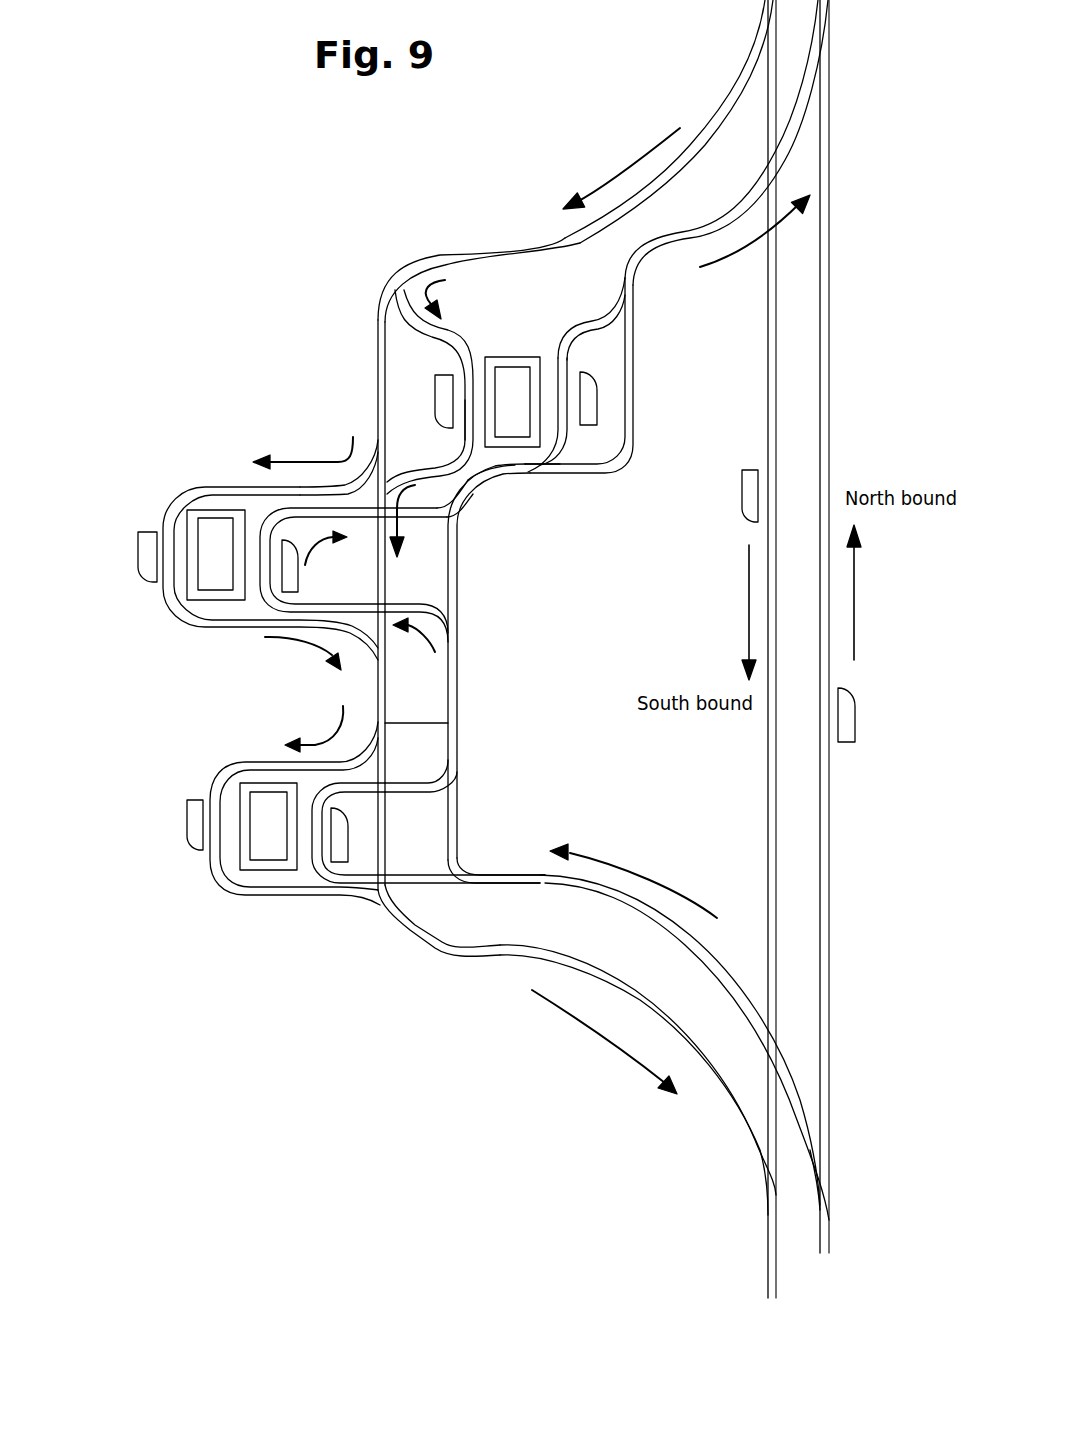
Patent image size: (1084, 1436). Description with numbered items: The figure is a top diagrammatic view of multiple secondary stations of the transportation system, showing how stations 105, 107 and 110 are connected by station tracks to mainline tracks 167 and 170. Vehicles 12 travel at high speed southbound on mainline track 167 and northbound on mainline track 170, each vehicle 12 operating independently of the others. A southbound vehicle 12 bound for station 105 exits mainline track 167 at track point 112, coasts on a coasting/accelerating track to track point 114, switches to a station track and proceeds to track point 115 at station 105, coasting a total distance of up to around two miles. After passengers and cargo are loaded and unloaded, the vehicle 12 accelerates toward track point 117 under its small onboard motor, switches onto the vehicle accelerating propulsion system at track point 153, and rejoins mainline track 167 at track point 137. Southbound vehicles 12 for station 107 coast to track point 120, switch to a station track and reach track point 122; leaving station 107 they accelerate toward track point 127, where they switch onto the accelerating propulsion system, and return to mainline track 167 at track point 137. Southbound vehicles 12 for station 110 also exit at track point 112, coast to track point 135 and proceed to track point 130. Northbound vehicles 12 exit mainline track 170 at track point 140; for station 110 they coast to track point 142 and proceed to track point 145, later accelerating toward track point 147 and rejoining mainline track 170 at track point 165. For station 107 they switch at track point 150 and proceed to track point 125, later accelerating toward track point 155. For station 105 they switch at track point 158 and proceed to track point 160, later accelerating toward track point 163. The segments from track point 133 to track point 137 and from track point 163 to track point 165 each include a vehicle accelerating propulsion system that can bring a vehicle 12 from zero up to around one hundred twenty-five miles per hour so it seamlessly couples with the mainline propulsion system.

The vehicle 12 is at (433, 385).
The station 105 is at (510, 362).
The station 107 is at (217, 597).
The station 110 is at (250, 870).
The track point 112 is at (765, 23).
The track point 114 is at (392, 280).
The track point 115 is at (477, 378).
The track point 117 is at (457, 435).
The track point 120 is at (378, 465).
The track point 122 is at (165, 583).
The track point 125 is at (260, 540).
The track point 127 is at (380, 657).
The track point 130 is at (213, 863).
The track point 133 is at (385, 903).
The track point 135 is at (460, 723).
The track point 137 is at (767, 1237).
The track point 140 is at (830, 1200).
The track point 142 is at (500, 873).
The track point 145 is at (325, 801).
The track point 147 is at (458, 760).
The track point 150 is at (460, 640).
The track point 153 is at (440, 482).
The track point 155 is at (475, 493).
The track point 158 is at (523, 477).
The track point 160 is at (558, 357).
The track point 163 is at (633, 282).
The track point 165 is at (827, 23).
The mainline track 167 is at (768, 320).
The mainline track 170 is at (829, 268).